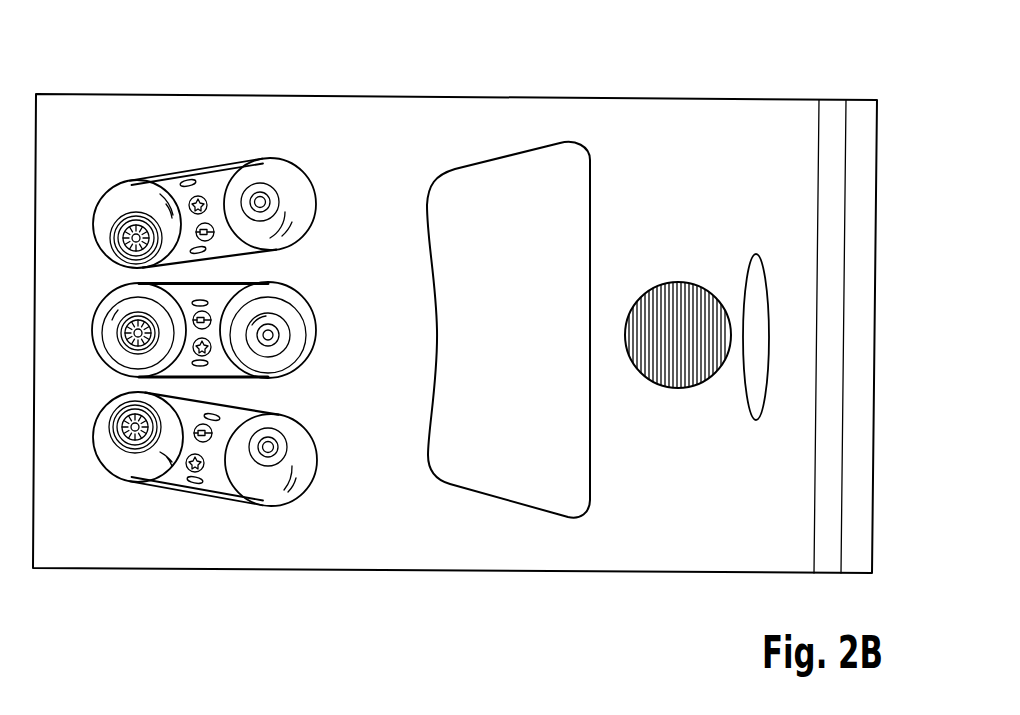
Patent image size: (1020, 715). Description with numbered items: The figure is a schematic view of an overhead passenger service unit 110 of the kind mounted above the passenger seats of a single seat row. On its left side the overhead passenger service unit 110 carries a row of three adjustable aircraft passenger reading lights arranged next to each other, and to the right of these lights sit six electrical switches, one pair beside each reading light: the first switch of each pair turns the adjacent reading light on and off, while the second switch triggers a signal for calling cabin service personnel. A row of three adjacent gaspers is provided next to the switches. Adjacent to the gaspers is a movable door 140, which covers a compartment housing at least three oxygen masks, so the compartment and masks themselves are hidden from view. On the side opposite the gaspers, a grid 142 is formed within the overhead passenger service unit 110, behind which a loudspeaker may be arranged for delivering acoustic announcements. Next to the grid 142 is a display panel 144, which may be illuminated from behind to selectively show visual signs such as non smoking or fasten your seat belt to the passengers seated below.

The overhead passenger service unit 110 is at (784, 66).
The movable door 140 is at (580, 237).
The grid 142 is at (690, 270).
The display panel 144 is at (767, 284).